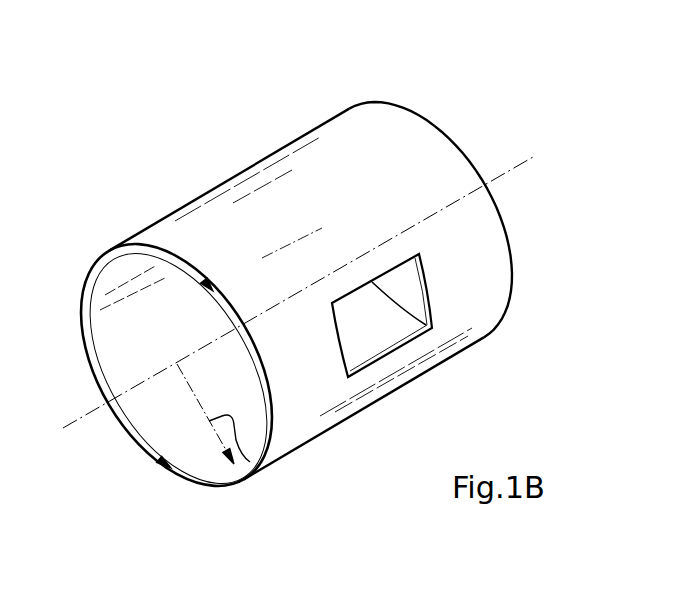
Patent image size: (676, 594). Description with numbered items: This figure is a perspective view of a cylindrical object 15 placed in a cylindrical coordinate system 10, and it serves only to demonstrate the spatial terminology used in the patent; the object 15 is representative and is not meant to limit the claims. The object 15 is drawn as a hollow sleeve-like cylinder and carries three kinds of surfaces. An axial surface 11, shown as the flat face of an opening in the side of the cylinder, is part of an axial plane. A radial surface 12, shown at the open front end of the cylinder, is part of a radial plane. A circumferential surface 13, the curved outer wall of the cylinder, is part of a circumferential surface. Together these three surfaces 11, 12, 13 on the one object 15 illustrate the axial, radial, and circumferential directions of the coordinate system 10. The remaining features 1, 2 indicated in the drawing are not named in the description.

The longitudinal axis 1 is at (73, 424).
The locking tab 2 is at (250, 462).
The cylindrical coordinate system 10 is at (458, 105).
The axial surface 11 is at (411, 340).
The radial surface 12 is at (190, 476).
The circumferential surface 13 is at (275, 197).
The cylindrical object 15 is at (323, 97).